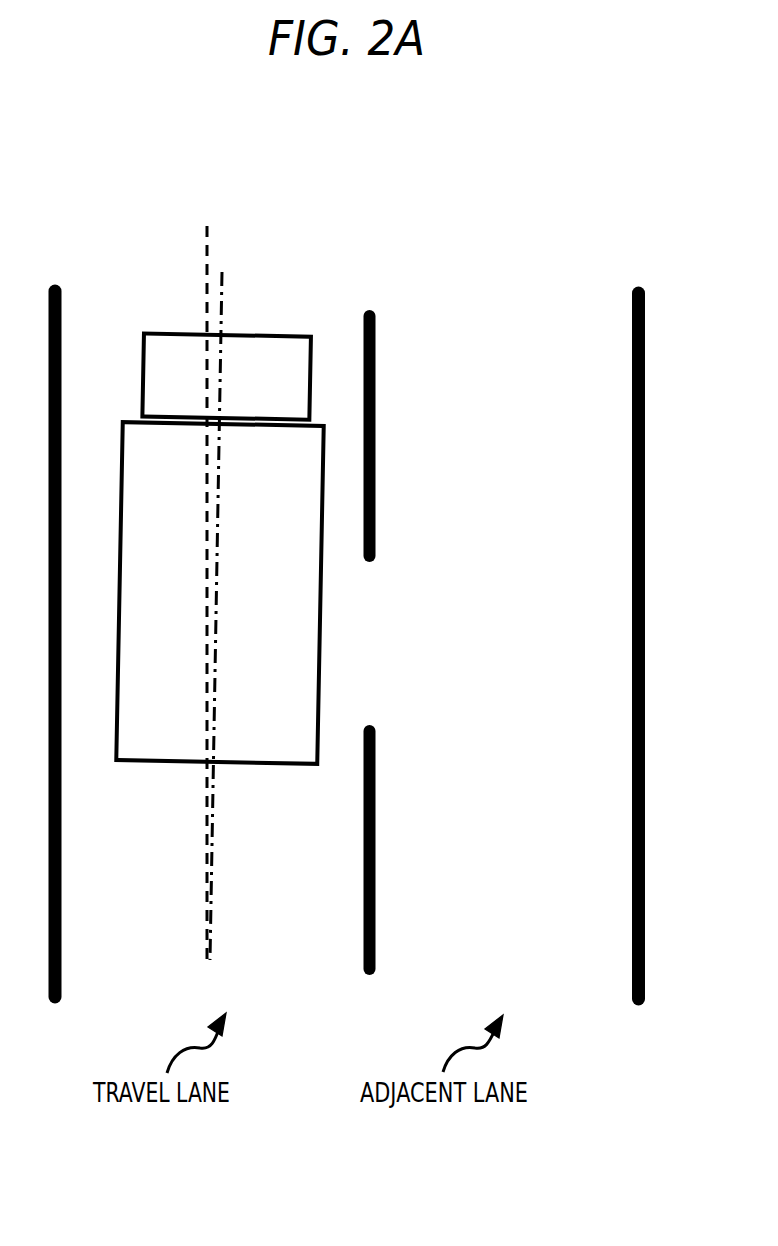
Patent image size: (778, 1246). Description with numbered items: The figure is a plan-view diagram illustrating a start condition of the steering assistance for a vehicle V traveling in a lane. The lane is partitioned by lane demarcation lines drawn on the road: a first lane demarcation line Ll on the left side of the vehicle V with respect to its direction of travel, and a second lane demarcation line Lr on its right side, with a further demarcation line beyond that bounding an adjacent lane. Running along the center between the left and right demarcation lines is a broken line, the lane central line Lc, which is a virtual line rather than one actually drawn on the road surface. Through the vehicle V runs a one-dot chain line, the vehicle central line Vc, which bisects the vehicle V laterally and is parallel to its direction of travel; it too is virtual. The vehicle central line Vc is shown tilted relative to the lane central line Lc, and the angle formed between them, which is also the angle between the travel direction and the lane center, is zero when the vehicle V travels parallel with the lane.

The first lane demarcation line Ll is at (57, 286).
The lane central line Lc is at (207, 226).
The vehicle central line Vc is at (212, 282).
The vehicle V is at (225, 760).
The second lane demarcation line Lr is at (367, 311).